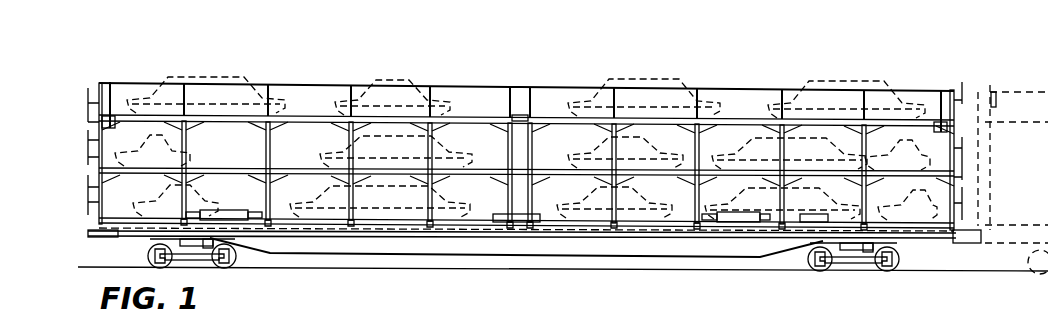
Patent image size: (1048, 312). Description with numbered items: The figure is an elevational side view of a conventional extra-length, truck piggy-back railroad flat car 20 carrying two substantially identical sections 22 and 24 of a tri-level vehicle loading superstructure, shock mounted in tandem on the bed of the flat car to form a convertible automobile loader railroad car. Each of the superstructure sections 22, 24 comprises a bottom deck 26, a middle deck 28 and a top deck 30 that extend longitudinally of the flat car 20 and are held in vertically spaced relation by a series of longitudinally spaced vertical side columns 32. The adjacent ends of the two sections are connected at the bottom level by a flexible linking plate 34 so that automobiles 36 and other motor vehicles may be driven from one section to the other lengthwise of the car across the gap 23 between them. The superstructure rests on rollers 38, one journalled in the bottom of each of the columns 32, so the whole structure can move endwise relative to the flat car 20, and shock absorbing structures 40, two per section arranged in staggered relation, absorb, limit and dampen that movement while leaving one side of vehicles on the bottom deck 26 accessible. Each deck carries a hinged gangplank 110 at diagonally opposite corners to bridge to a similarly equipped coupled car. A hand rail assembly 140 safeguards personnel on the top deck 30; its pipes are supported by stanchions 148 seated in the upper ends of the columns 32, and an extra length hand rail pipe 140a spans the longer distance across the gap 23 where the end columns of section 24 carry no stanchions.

The railroad flat car 20 is at (503, 258).
The superstructure section 22 is at (306, 75).
The gap 23 is at (523, 107).
The superstructure section 24 is at (750, 72).
The bottom deck 26 is at (112, 238).
The middle deck 28 is at (92, 155).
The top deck 30 is at (115, 113).
The vertical side column 32 is at (95, 121).
The flexible linking plate 34 is at (528, 237).
The automobile 36 is at (397, 137).
The roller 38 is at (270, 233).
The shock absorbing structure 40 is at (240, 203).
The hinged gangplank 110 is at (87, 97).
The hand rail assembly 140 is at (163, 82).
The extra length hand rail pipe 140a is at (563, 112).
The stanchion 148 is at (776, 104).